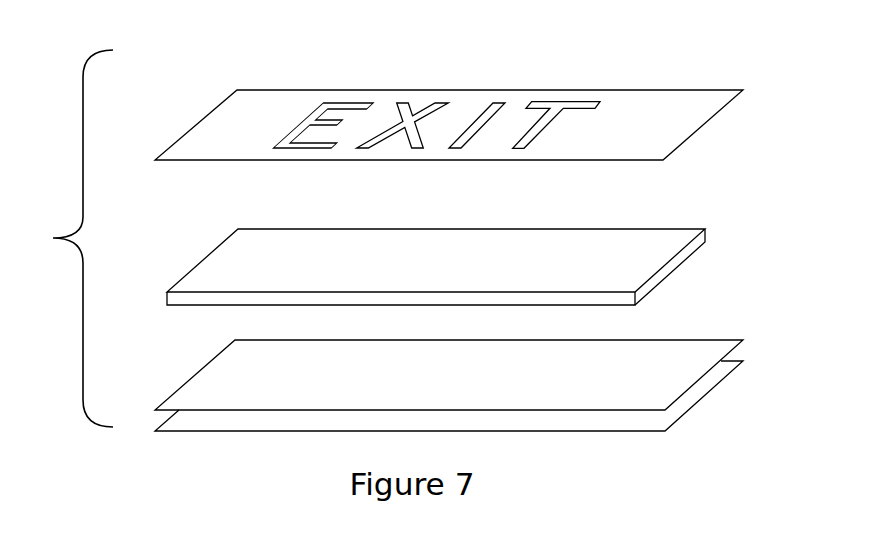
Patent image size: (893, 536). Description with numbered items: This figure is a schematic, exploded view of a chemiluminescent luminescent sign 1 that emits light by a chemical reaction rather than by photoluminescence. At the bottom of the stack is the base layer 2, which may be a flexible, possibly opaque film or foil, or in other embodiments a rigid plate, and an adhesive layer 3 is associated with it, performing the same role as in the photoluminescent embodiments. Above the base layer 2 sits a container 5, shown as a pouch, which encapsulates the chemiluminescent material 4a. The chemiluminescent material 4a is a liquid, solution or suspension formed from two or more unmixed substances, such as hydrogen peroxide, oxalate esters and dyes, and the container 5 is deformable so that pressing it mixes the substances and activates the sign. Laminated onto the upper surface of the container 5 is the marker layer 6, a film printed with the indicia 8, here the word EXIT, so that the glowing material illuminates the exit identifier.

The luminescent sign 1 is at (53, 238).
The base layer 2 is at (710, 375).
The adhesive layer 3 is at (680, 415).
The chemiluminescent material 4a is at (670, 268).
The container 5 is at (435, 272).
The marker layer 6 is at (707, 125).
The indicia 8 is at (300, 122).